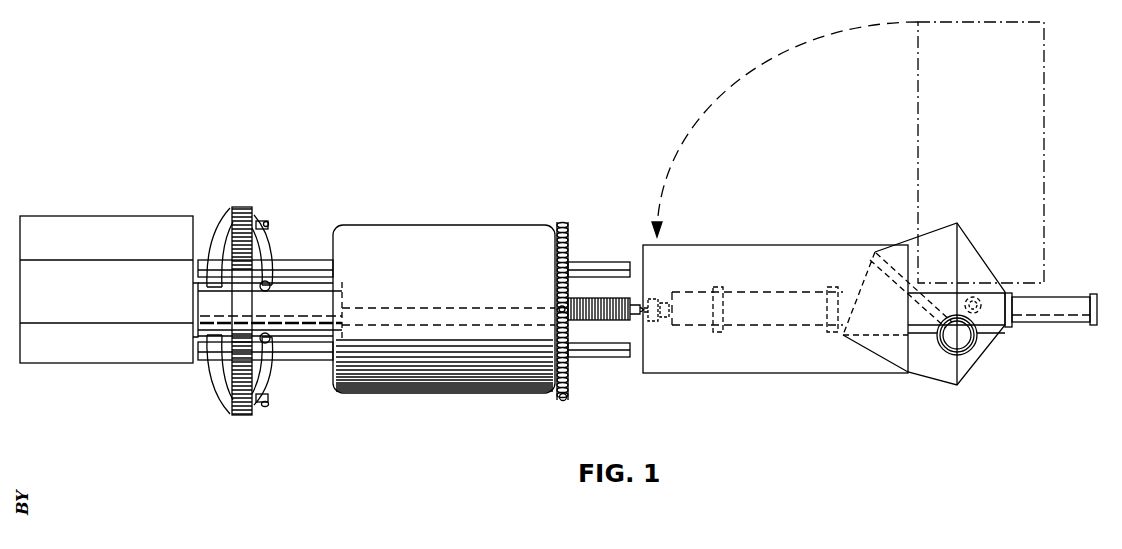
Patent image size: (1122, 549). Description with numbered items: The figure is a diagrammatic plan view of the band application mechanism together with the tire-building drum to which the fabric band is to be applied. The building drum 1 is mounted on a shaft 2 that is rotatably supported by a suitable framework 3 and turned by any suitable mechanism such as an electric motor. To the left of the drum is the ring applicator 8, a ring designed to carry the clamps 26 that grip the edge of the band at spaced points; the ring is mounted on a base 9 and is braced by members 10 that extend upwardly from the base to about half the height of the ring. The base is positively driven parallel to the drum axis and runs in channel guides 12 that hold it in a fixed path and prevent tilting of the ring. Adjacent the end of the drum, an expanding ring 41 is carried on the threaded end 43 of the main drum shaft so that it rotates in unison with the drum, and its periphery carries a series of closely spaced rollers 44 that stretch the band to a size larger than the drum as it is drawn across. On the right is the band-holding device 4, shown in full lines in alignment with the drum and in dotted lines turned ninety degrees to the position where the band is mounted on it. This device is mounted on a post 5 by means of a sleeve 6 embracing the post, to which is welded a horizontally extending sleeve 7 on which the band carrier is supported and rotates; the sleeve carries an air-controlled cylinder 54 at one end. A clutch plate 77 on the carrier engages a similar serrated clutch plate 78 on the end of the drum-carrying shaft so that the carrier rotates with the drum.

The building drum 1 is at (410, 378).
The shaft 2 is at (318, 300).
The framework 3 is at (118, 345).
The band-holding device 4 is at (738, 373).
The post 5 is at (948, 352).
The sleeve 6 is at (972, 352).
The horizontally extending sleeve 7 is at (780, 292).
The ring applicator 8 is at (240, 207).
The base 9 is at (290, 283).
The bracing members 10 is at (222, 232).
The channel guides 12 is at (312, 262).
The clamps 26 is at (266, 222).
The expanding ring 41 is at (564, 401).
The threaded end 43 is at (583, 320).
The rollers 44 is at (563, 222).
The air-controlled cylinder 54 is at (1060, 312).
The clutch plate 77 is at (657, 298).
The clutch plate 78 is at (627, 298).